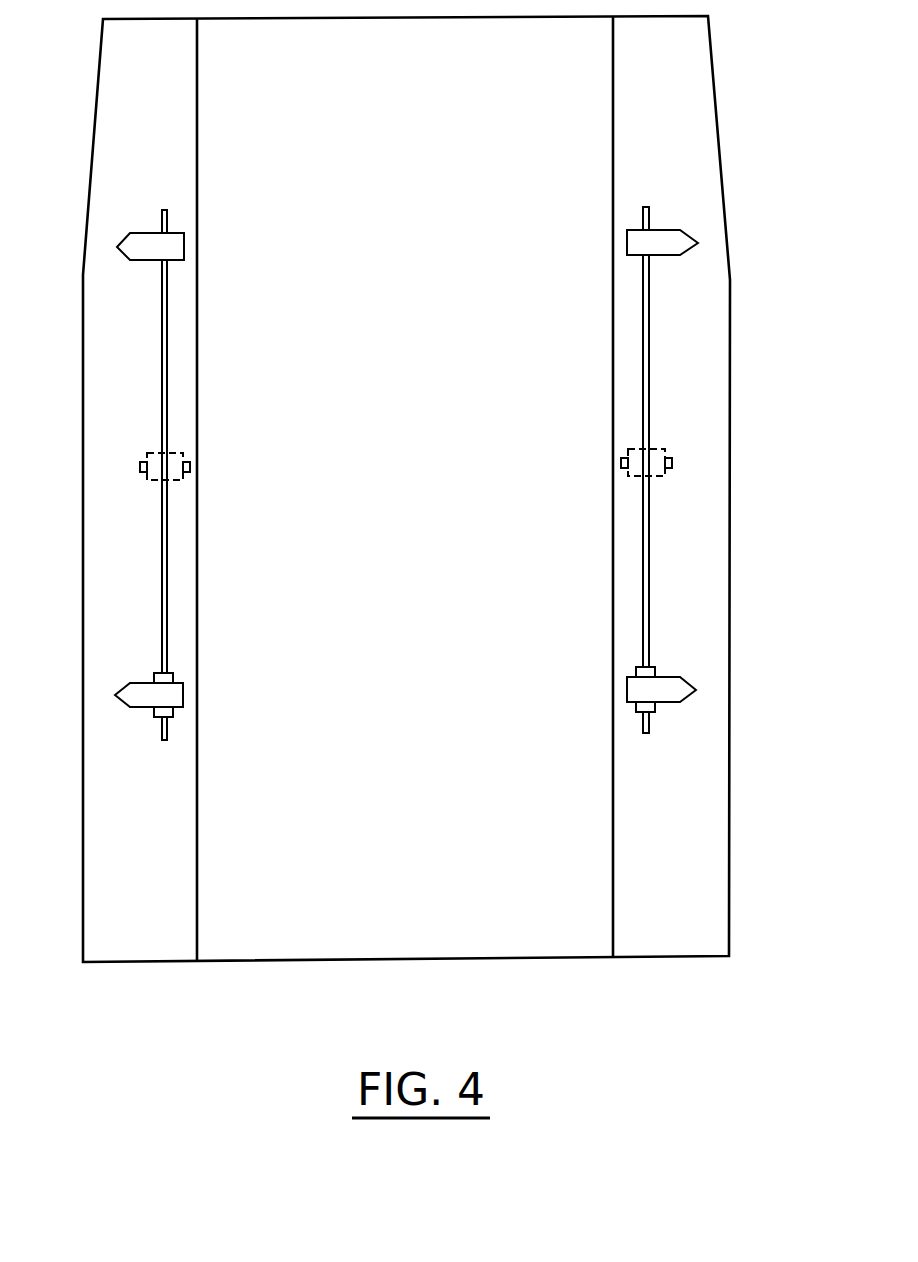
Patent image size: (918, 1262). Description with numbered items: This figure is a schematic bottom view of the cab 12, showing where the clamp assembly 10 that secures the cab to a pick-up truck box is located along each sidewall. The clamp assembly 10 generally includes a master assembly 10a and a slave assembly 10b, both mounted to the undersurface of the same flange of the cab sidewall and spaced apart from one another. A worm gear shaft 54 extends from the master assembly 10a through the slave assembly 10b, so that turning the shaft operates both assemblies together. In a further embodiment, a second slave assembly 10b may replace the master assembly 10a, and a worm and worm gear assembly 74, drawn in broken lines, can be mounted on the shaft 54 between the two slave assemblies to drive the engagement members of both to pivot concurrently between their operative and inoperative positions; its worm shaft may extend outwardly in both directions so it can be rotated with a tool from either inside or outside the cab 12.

The clamp assembly 10 is at (407, 440).
The master assembly 10a is at (110, 695).
The slave assembly 10b is at (110, 247).
The cab 12 is at (733, 872).
The worm gear shaft 54 is at (162, 518).
The worm and worm gear assembly 74 is at (140, 467).